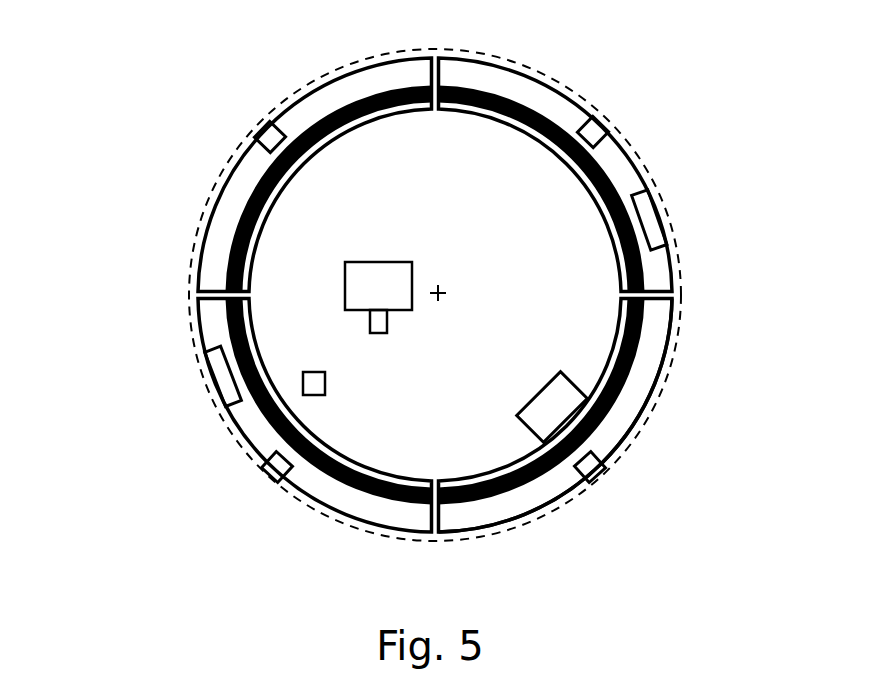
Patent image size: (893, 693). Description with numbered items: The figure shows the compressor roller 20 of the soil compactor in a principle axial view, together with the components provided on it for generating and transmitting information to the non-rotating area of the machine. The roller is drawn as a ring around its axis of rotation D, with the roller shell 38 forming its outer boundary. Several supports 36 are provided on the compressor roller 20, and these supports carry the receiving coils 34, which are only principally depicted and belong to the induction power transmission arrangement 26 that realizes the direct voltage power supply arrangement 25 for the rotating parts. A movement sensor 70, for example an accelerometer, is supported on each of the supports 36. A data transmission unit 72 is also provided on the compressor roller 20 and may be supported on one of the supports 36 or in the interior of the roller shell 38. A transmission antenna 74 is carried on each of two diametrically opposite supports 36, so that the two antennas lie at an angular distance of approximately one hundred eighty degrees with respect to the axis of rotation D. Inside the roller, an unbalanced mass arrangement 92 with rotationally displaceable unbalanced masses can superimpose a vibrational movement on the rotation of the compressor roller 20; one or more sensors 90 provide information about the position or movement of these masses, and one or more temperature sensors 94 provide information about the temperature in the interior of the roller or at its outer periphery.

The compressor roller 20 is at (453, 301).
The direct voltage power supply arrangement 25 is at (212, 130).
The induction power transmission arrangement 26 is at (260, 297).
The receiving coils 34 is at (525, 122).
The supports 36 is at (518, 82).
The roller shell 38 is at (550, 512).
The movement sensor 70 is at (262, 123).
The data transmission unit 72 is at (545, 380).
The transmission antenna 74 is at (650, 215).
The sensors 90 is at (370, 322).
The unbalanced mass arrangement 92 is at (345, 280).
The temperature sensors 94 is at (303, 380).
The axis of rotation D is at (444, 289).